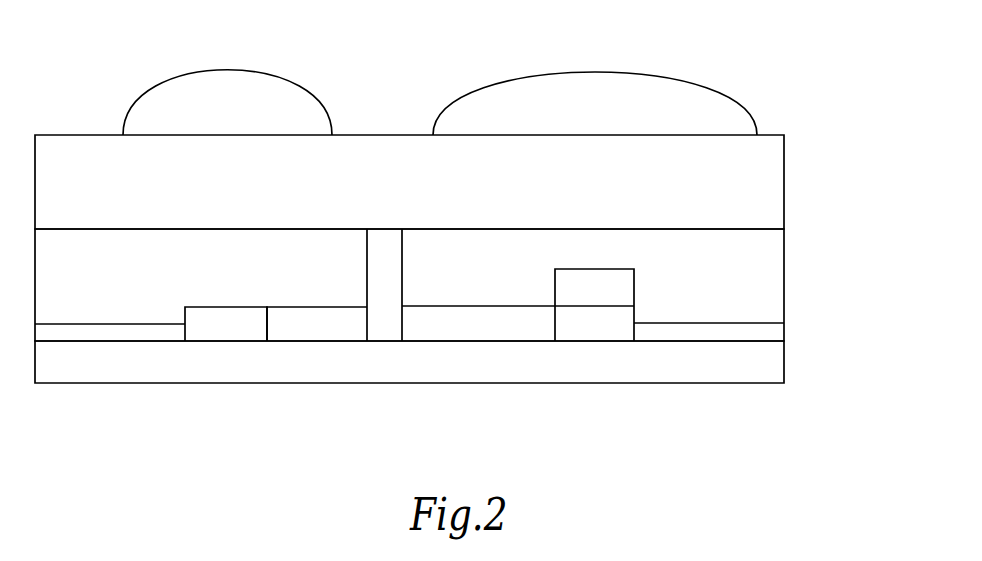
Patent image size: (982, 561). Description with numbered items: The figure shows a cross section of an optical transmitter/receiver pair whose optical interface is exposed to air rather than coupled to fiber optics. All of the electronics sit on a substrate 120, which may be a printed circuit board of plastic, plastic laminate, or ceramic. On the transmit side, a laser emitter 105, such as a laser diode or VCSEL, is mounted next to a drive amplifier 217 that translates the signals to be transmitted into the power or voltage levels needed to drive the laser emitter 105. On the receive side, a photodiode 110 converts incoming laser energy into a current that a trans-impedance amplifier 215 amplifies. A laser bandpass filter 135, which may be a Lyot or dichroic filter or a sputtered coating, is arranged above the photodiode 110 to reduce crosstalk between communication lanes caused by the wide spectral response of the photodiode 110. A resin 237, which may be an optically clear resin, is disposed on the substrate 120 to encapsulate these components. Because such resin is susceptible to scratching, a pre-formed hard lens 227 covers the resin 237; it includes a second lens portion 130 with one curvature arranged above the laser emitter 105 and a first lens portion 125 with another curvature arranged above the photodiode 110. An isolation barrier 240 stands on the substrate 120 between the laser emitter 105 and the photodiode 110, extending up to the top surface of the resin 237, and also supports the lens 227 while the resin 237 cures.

The laser emitter 105 is at (213, 369).
The photodiode 110 is at (602, 369).
The substrate 120 is at (438, 362).
The first lens portion 125 is at (595, 81).
The second lens portion 130 is at (227, 80).
The laser bandpass filter 135 is at (623, 287).
The trans-impedance amplifier 215 is at (518, 369).
The drive amplifier 217 is at (317, 369).
The lens 227 is at (437, 182).
The resin 237 is at (438, 285).
The isolation barrier 240 is at (404, 330).